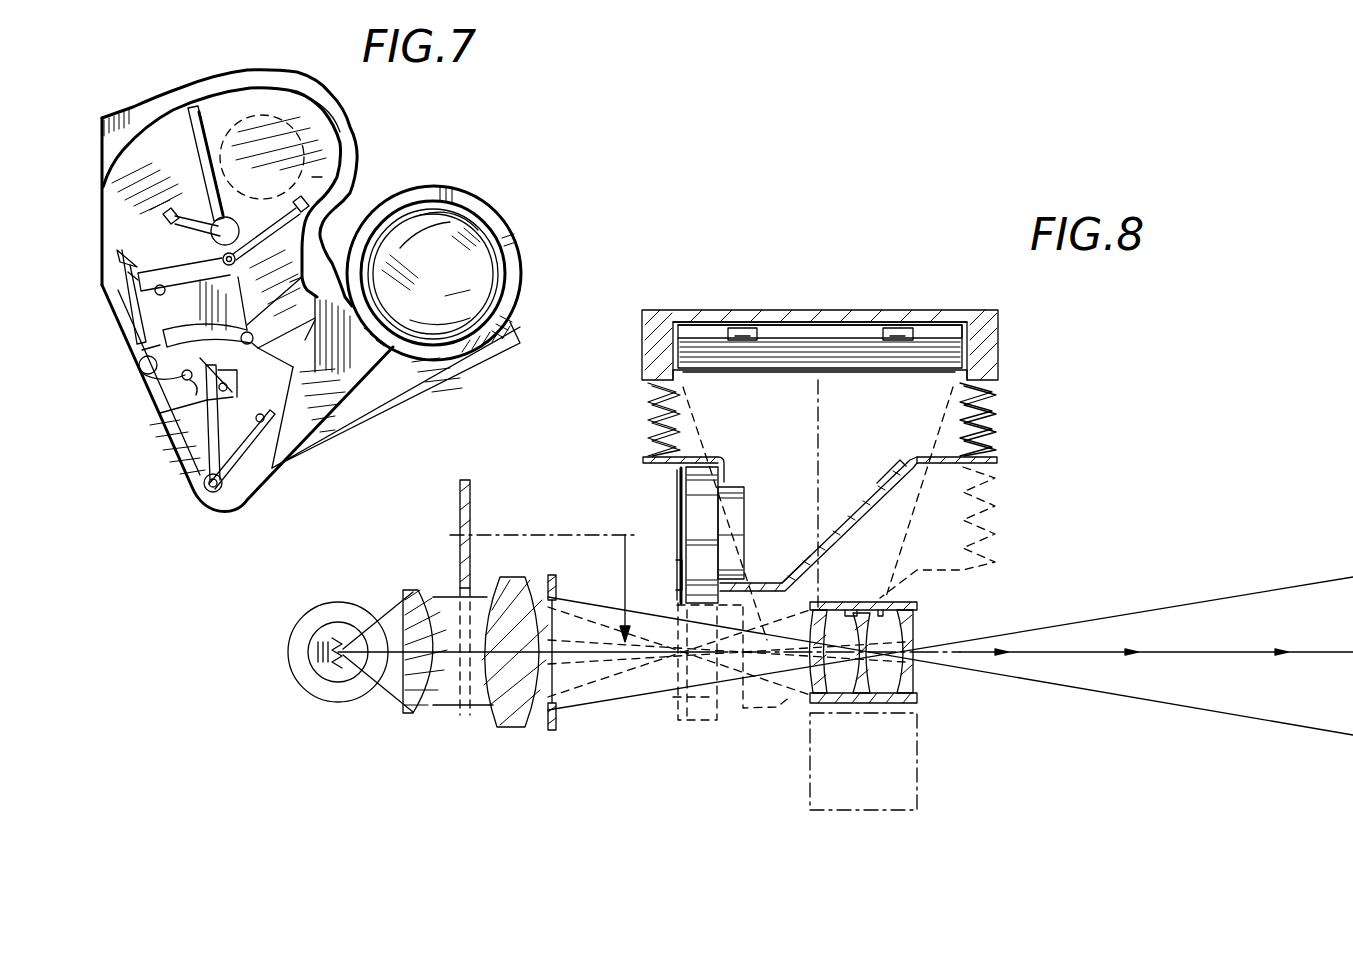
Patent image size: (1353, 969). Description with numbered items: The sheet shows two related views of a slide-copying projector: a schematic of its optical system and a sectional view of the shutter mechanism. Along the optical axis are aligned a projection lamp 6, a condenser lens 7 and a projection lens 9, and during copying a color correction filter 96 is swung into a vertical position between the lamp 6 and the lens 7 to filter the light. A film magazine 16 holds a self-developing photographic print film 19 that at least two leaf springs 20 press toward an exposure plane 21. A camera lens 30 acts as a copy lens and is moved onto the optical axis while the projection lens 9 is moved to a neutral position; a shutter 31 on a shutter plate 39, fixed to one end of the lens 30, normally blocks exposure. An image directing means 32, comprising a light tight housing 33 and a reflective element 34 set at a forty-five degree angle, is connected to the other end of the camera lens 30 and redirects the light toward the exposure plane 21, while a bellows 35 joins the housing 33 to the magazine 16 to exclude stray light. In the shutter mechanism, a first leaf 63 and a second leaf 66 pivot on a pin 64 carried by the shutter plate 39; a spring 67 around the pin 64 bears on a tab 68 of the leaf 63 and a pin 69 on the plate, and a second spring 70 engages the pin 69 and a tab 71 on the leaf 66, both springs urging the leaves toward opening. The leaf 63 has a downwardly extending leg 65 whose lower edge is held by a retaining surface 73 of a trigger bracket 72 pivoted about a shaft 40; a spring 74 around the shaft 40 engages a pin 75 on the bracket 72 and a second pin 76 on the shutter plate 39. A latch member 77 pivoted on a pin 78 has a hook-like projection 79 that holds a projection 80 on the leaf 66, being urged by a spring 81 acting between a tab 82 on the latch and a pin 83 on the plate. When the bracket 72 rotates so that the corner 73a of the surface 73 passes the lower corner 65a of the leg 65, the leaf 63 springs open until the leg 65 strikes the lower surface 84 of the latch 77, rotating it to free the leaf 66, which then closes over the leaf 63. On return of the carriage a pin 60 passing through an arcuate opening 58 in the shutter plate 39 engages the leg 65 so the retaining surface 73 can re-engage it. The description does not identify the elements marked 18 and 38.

In FIG. 8, the projection lamp 6 is at (334, 608).
In FIG. 8, the condenser lens 7 is at (525, 578).
In FIG. 7, the projection lens 9 is at (500, 226).
In FIG. 8, the projection lens 9 is at (918, 688).
In FIG. 8, the film magazine 16 is at (1003, 340).
In FIG. 8, the cover plate 18 is at (930, 323).
In FIG. 8, the self-developing photographic print film 19 is at (805, 348).
In FIG. 8, the leaf springs 20 is at (742, 330).
In FIG. 8, the exposure plane 21 is at (848, 372).
In FIG. 7, the camera lens 30 is at (240, 118).
In FIG. 8, the camera lens 30 is at (745, 504).
In FIG. 7, the shutter 31 is at (261, 99).
In FIG. 8, the shutter 31 is at (676, 492).
In FIG. 8, the image directing means 32 is at (850, 540).
In FIG. 8, the light tight housing 33 is at (890, 490).
In FIG. 8, the reflective element 34 is at (808, 550).
In FIG. 8, the bellows 35 is at (1000, 408).
In FIG. 7, the lens barrel 38 is at (510, 260).
In FIG. 7, the shutter plate 39 is at (398, 160).
In FIG. 8, the shutter plate 39 is at (693, 500).
In FIG. 7, the shaft 40 is at (222, 490).
In FIG. 7, the arcuate opening 58 is at (242, 296).
In FIG. 7, the pin 60 is at (256, 322).
In FIG. 8, the pin 60 is at (683, 590).
In FIG. 7, the first leaf 63 is at (328, 177).
In FIG. 7, the pin 64 is at (220, 246).
In FIG. 7, the leg 65 is at (328, 240).
In FIG. 7, the lower corner 65a is at (305, 328).
In FIG. 7, the second leaf 66 is at (132, 98).
In FIG. 7, the spring 67 is at (262, 241).
In FIG. 7, the tab 68 is at (293, 206).
In FIG. 7, the pin 69 is at (165, 294).
In FIG. 7, the second spring 70 is at (182, 232).
In FIG. 7, the tab 71 is at (163, 214).
In FIG. 7, the trigger bracket 72 is at (178, 449).
In FIG. 7, the retaining surface 73 is at (270, 398).
In FIG. 7, the corner 73a is at (268, 343).
In FIG. 7, the spring 74 is at (270, 468).
In FIG. 7, the pin 75 is at (256, 420).
In FIG. 7, the second pin 76 is at (228, 389).
In FIG. 7, the latch member 77 is at (137, 280).
In FIG. 7, the pin 78 is at (139, 368).
In FIG. 7, the hook-like projection 79 is at (117, 250).
In FIG. 7, the projection 80 is at (134, 298).
In FIG. 7, the spring 81 is at (142, 350).
In FIG. 7, the tab 82 is at (196, 380).
In FIG. 7, the pin 83 is at (182, 388).
In FIG. 7, the lower surface 84 is at (206, 335).
In FIG. 8, the color correction filter 96 is at (470, 482).